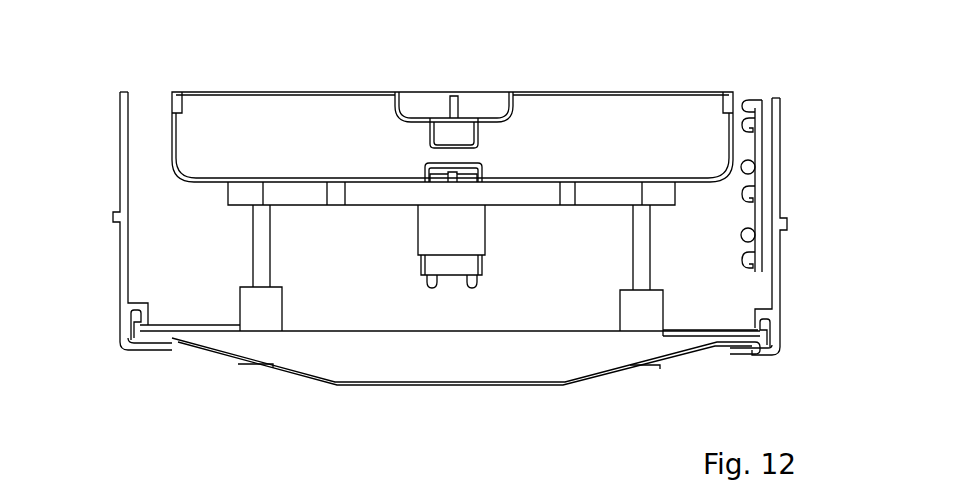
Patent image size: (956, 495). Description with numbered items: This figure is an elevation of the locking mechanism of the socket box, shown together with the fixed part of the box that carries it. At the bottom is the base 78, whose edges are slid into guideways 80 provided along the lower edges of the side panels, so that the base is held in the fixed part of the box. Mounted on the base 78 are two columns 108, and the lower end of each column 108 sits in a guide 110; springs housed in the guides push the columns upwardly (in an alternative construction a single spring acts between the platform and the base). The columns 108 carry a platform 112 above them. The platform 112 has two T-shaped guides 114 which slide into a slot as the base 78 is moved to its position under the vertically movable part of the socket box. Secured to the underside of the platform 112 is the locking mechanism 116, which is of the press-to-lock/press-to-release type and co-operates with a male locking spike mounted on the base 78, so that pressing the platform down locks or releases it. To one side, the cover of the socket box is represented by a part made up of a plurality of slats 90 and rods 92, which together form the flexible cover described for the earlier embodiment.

The base 78 is at (428, 163).
The guideways 80 is at (770, 337).
The slats 90 is at (752, 200).
The rods 92 is at (748, 165).
The columns 108 is at (253, 253).
The guide 110 is at (258, 305).
The platform 112 is at (228, 193).
The T-shaped guides 114 is at (457, 172).
The locking mechanism 116 is at (452, 280).